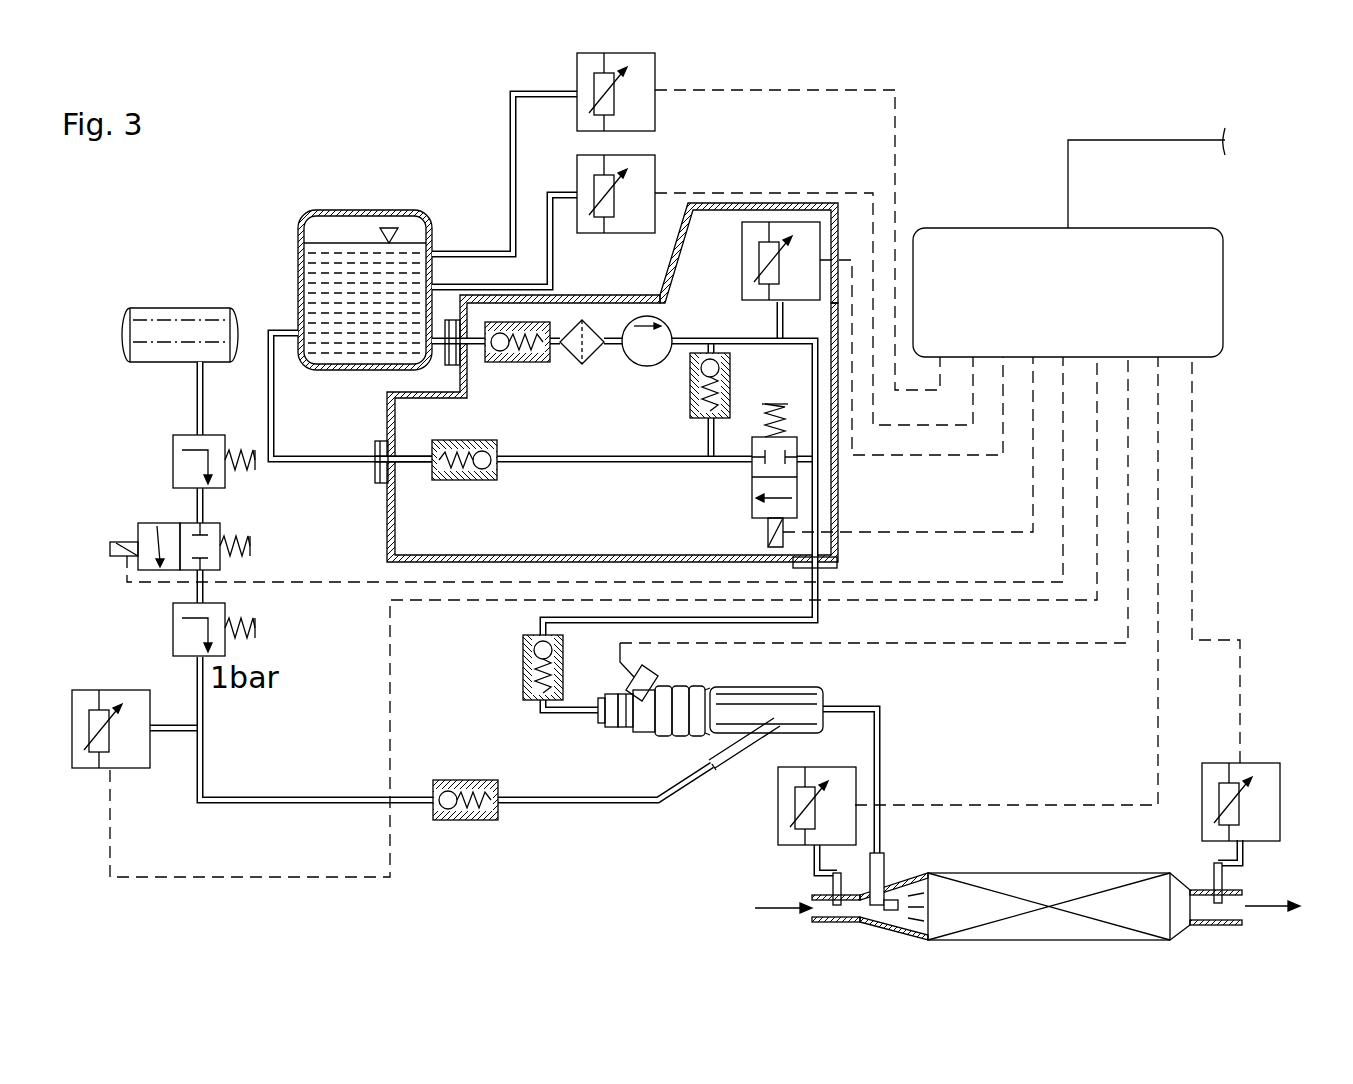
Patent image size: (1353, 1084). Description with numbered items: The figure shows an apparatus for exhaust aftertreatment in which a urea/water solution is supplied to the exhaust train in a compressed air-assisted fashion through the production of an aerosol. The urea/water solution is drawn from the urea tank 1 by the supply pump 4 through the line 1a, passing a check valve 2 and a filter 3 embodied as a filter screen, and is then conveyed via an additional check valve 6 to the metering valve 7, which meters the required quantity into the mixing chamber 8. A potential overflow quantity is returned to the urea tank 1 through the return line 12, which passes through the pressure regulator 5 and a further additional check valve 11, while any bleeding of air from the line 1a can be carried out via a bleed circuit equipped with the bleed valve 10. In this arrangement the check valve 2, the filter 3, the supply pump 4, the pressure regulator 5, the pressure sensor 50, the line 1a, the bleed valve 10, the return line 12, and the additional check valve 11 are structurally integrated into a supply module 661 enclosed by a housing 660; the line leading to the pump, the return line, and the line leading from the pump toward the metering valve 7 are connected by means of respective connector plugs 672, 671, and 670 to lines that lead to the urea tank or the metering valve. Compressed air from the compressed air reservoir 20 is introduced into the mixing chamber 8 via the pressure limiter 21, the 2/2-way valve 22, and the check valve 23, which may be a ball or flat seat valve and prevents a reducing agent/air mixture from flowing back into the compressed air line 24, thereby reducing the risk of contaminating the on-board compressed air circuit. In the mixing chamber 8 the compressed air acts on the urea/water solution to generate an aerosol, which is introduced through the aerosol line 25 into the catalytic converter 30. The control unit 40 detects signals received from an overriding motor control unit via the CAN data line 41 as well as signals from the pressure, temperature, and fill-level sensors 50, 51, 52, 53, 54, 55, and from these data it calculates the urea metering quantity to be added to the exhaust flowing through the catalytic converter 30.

The urea tank 1 is at (375, 208).
The line 1a is at (815, 390).
The check valve 2 is at (523, 364).
The filter 3 is at (576, 364).
The supply pump 4 is at (646, 366).
The pressure regulator 5 is at (715, 352).
The additional check valve 6 is at (522, 665).
The metering valve 7 is at (598, 715).
The mixing chamber 8 is at (783, 695).
The bleed valve 10 is at (752, 510).
The additional check valve 11 is at (473, 483).
The return line 12 is at (595, 465).
The compressed air reservoir 20 is at (181, 325).
The pressure limiter 21 is at (173, 460).
The 2/2-way valve 22 is at (155, 525).
The check valve 23 is at (452, 780).
The compressed air line 24 is at (305, 797).
The aerosol line 25 is at (881, 770).
The catalytic converter 30 is at (1060, 890).
The control unit 40 is at (1223, 293).
The CAN data line 41 is at (1182, 143).
The pressure sensor 50 is at (742, 265).
The sensor 51 is at (655, 177).
The sensor 52 is at (655, 85).
The sensor 53 is at (115, 690).
The sensor 54 is at (778, 810).
The sensor 55 is at (1278, 818).
The housing 660 is at (820, 205).
The supply module 661 is at (410, 500).
The connector plug 670 is at (838, 565).
The connector plug 671 is at (375, 445).
The connector plug 672 is at (452, 320).